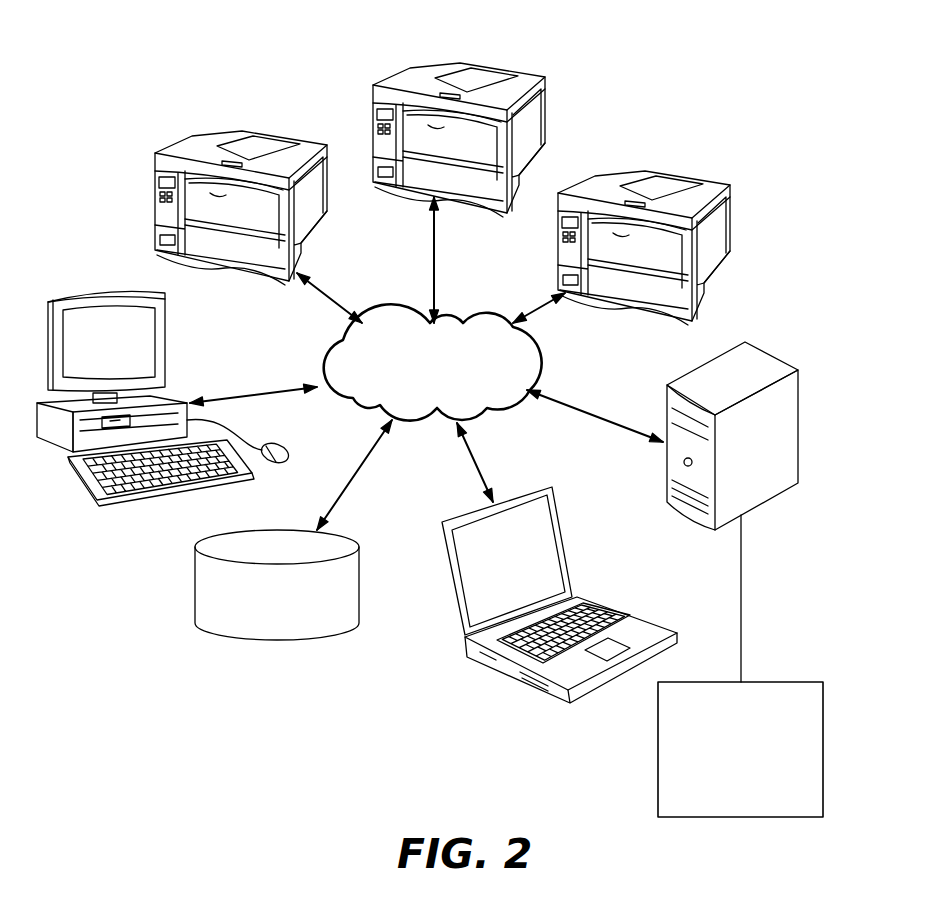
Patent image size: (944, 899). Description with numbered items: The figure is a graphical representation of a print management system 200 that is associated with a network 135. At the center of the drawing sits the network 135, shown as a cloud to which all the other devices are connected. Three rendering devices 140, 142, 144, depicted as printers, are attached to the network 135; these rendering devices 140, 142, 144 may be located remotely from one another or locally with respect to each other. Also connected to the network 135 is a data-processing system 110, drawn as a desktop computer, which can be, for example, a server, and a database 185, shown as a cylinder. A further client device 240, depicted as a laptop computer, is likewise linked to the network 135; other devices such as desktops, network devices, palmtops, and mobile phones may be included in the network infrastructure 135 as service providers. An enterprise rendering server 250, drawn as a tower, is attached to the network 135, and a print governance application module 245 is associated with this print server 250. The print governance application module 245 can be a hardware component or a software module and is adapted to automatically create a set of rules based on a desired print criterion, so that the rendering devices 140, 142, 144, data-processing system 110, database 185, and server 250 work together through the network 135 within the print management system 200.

The print management system 200 is at (632, 62).
The data-processing system 110 is at (118, 288).
The network 135 is at (470, 313).
The rendering device 140 is at (495, 68).
The rendering device 142 is at (272, 135).
The rendering device 144 is at (685, 175).
The database 185 is at (197, 583).
The laptop computer 240 is at (453, 587).
The enterprise rendering server 250 is at (667, 473).
The print governance application module 245 is at (658, 750).